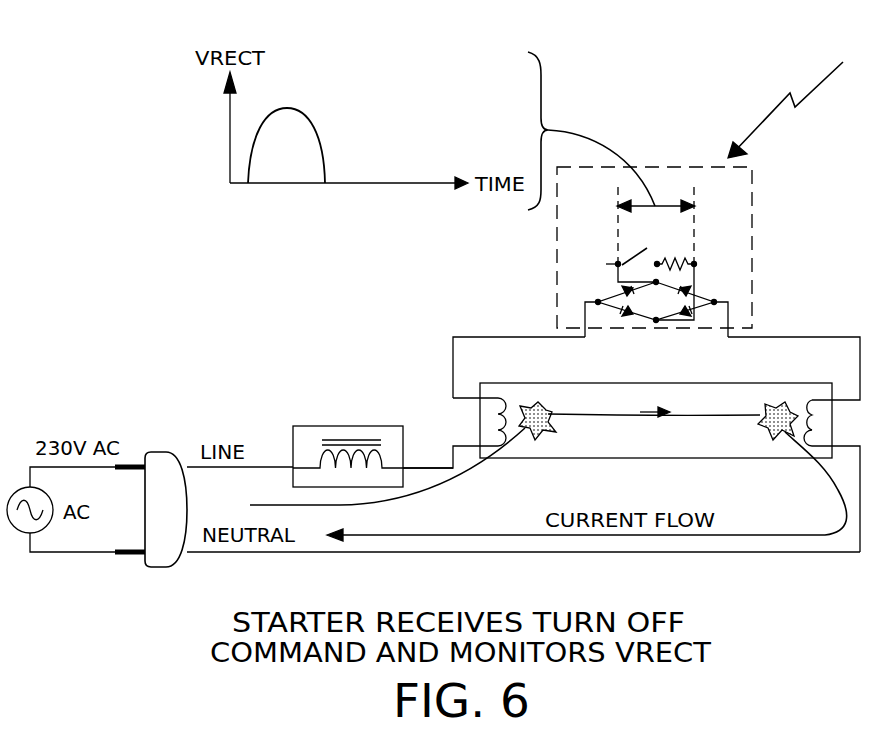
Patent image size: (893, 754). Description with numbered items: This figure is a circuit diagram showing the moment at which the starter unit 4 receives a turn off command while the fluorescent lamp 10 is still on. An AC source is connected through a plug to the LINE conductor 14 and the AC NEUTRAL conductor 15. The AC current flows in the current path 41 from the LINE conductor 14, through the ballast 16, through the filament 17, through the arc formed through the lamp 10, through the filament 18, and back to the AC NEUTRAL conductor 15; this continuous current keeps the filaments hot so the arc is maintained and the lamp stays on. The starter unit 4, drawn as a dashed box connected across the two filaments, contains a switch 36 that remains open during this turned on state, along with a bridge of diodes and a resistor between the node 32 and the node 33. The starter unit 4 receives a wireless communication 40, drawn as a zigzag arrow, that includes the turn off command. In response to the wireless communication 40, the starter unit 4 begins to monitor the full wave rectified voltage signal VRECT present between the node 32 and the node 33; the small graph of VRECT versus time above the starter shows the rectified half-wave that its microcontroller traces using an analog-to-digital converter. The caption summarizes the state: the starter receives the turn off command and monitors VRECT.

The starter unit 4 is at (752, 264).
The fluorescent lamp 10 is at (686, 383).
The LINE conductor 14 is at (96, 469).
The AC NEUTRAL conductor 15 is at (86, 554).
The ballast 16 is at (360, 426).
The filament 17 is at (493, 421).
The filament 18 is at (813, 421).
The node 32 is at (607, 265).
The node 33 is at (697, 264).
The switch 36 is at (647, 248).
The wireless communication 40 is at (776, 113).
The current path 41 is at (651, 410).